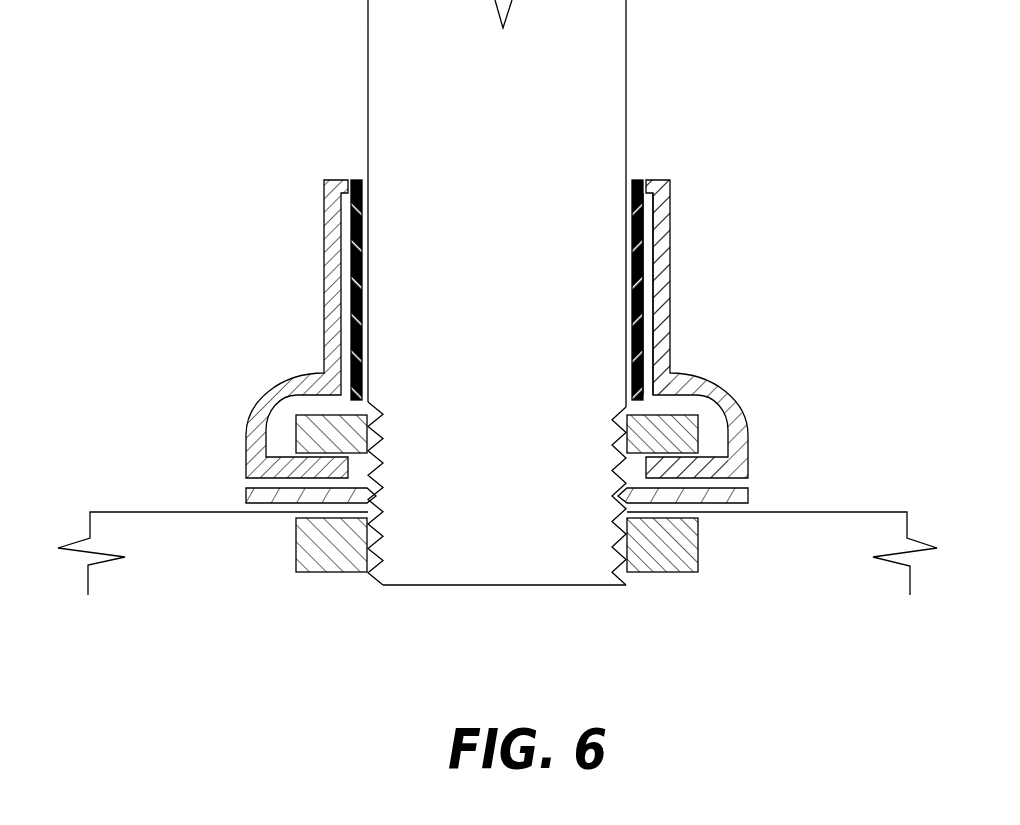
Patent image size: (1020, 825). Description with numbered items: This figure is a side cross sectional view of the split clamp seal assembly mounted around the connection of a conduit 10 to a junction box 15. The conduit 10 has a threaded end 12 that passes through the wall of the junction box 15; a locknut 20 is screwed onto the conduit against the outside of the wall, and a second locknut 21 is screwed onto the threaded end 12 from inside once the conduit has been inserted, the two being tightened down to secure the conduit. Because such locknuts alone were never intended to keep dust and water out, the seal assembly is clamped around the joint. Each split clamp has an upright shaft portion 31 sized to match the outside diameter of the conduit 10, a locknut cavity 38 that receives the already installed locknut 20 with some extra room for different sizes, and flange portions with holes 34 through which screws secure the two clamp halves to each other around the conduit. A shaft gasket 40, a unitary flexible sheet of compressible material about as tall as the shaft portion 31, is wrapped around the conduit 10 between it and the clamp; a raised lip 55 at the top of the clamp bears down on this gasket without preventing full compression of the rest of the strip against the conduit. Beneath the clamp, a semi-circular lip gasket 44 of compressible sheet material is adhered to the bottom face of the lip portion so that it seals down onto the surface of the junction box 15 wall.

The conduit 10 is at (627, 82).
The threaded end 12 is at (627, 556).
The junction box 15 is at (795, 513).
The locknut 20 is at (667, 432).
The lower nut block 21 is at (672, 565).
The shaft portion 31 is at (665, 211).
The flange holes 34 is at (697, 467).
The locknut cavity 38 is at (728, 401).
The shaft gasket 40 is at (638, 257).
The lip gasket 44 is at (737, 497).
The raised lip 55 is at (645, 181).